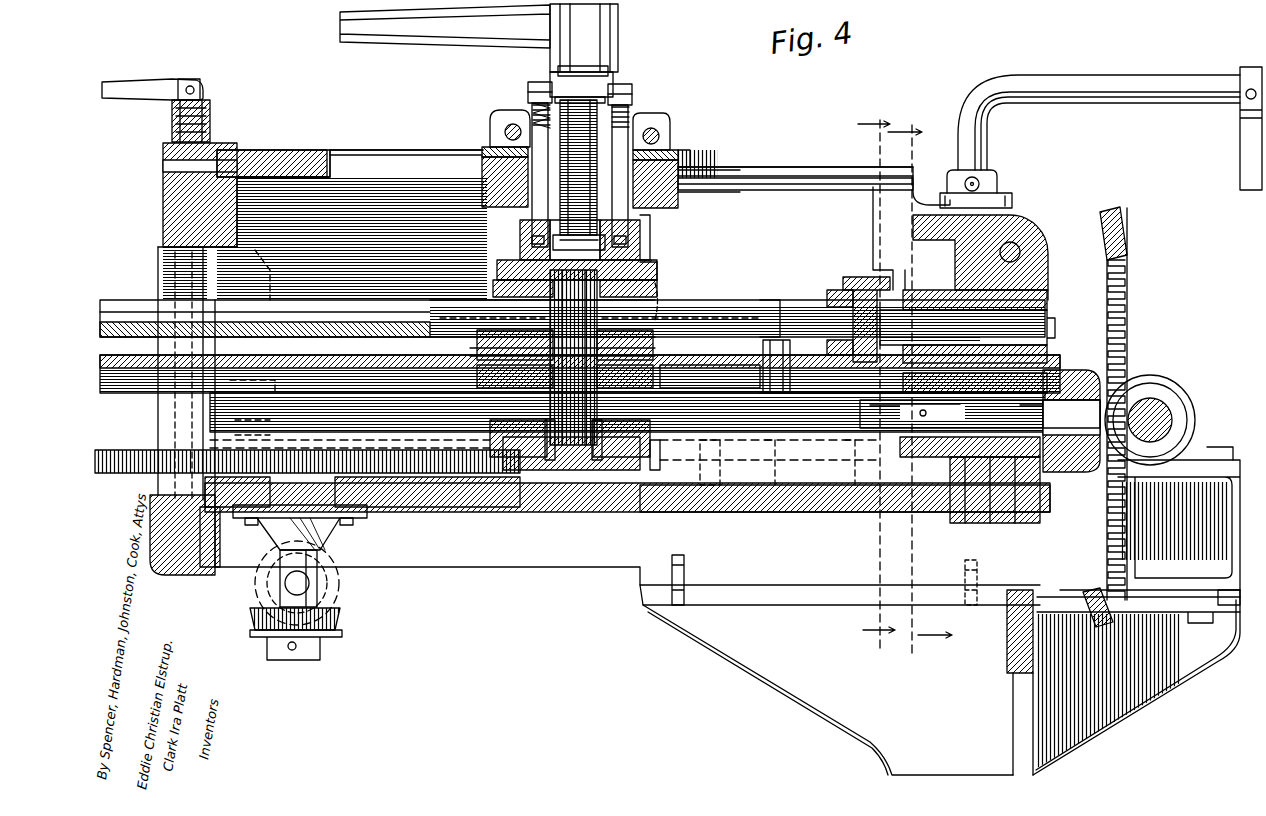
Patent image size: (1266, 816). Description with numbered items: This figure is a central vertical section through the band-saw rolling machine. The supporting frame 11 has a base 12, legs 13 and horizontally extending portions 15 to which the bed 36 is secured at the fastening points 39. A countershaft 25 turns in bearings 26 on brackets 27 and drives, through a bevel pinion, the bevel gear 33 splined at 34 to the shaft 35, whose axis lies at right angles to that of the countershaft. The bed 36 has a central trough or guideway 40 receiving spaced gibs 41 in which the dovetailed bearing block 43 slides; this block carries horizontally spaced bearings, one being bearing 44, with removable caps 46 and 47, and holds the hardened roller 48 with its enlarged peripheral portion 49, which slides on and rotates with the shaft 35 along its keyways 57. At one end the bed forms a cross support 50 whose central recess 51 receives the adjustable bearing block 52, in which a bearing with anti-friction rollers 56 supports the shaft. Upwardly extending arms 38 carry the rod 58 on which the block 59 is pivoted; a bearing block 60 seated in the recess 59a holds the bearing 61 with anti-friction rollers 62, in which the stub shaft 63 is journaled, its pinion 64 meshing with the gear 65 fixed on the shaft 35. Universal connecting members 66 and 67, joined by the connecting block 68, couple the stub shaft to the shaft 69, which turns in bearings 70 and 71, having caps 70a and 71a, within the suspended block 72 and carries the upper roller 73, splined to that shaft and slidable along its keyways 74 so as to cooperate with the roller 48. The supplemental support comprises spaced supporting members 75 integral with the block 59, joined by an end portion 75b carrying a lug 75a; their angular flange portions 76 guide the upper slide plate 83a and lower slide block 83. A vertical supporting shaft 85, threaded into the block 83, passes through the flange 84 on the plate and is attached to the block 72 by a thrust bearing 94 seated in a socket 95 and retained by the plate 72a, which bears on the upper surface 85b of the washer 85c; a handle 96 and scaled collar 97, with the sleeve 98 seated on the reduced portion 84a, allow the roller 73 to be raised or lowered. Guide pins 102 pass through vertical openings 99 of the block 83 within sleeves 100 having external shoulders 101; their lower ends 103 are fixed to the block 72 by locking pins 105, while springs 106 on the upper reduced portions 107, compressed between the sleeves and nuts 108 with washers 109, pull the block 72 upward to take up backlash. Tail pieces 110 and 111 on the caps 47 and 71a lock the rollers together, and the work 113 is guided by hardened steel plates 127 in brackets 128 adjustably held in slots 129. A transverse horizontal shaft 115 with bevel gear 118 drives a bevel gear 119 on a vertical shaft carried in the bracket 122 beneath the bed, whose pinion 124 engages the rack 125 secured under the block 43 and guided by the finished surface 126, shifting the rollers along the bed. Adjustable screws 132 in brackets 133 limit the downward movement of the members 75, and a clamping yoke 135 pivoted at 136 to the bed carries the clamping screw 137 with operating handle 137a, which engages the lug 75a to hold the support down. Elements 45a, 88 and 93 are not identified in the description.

The supporting frame 11 is at (920, 382).
The base 12 is at (881, 376).
The legs 13 is at (972, 690).
The horizontally extending portions 15 is at (712, 605).
The countershaft 25 is at (1163, 410).
The bearings 26 is at (1196, 428).
The brackets 27 is at (1150, 526).
The bevel gear 33 is at (1122, 240).
The spline 34 is at (1090, 405).
The shaft 35 is at (405, 393).
The bed 36 is at (624, 520).
The upwardly extending integral arms 38 is at (1035, 225).
The securing points 39 is at (660, 605).
The trough or guideway 40 is at (740, 470).
The gibs 41 is at (790, 455).
The bearing block 43 is at (779, 521).
The bearing 44 is at (605, 455).
The bearing block 45a is at (470, 480).
The removable cap 46 is at (655, 378).
The removable cap 47 is at (470, 428).
The roller 48 is at (555, 455).
The enlarged peripheral portion 49 is at (572, 460).
The cross support 50 is at (960, 470).
The central recess 51 is at (995, 470).
The bearing block 52 is at (1015, 470).
The anti-friction rollers 56 is at (980, 470).
The keyways 57 is at (360, 392).
The rod 58 is at (1010, 240).
The block 59 is at (1022, 250).
The recess 59a is at (955, 265).
The bearing block 60 is at (1048, 265).
The bearing 61 is at (1040, 378).
The anti-friction rollers 62 is at (1046, 305).
The stub shaft 63 is at (967, 327).
The pinion 64 is at (893, 285).
The gear 65 is at (916, 455).
The universal connecting member 66 is at (862, 280).
The universal connecting member 67 is at (835, 292).
The connecting block 68 is at (855, 363).
The shaft 69 is at (348, 300).
The bearing 70 is at (660, 290).
The removable cap 70a is at (650, 347).
The bearing 71 is at (495, 275).
The removable cap 71a is at (495, 330).
The block 72 is at (660, 272).
The plate 72a is at (532, 222).
The roller 73 is at (630, 272).
The keyways 74 is at (422, 305).
The supporting members 75 is at (420, 152).
The lug 75a is at (165, 182).
The end portion 75b is at (248, 150).
The angular flange portions 76 is at (370, 150).
The lower slide block 83 is at (672, 150).
The upper slide plate 83a is at (482, 160).
The upwardly extending flange 84 is at (640, 90).
The reduced portion 84a is at (606, 40).
The vertical supporting shaft 85 is at (578, 167).
The upper surface 85b is at (705, 190).
The washer 85c is at (690, 150).
The eye 88 is at (496, 130).
The pin 93 is at (494, 138).
The thrust bearing 94 is at (640, 225).
The socket 95 is at (515, 262).
The handle 96 is at (382, 30).
The collar 97 is at (610, 60).
The sleeve 98 is at (615, 74).
The vertical openings 99 is at (484, 200).
The sleeves 100 is at (680, 165).
The external shoulders 101 is at (483, 190).
The guide pins 102 is at (482, 205).
The lower ends 103 is at (520, 232).
The locking pins 105 is at (536, 240).
The springs 106 is at (530, 104).
The upper reduced portions 107 is at (533, 116).
The nuts 108 is at (540, 84).
The washers 109 is at (530, 122).
The tail piece 110 is at (138, 376).
The tail piece 111 is at (132, 300).
The work 113 is at (716, 362).
The transverse horizontal shaft 115 is at (340, 589).
The bevel gear 118 is at (260, 600).
The bevel gear 119 is at (340, 630).
The bracket 122 is at (325, 545).
The pinion 124 is at (295, 455).
The rack 125 is at (430, 505).
The finished surface 126 is at (495, 480).
The hardened steel plates 127 is at (770, 330).
The brackets 128 is at (790, 362).
The slots 129 is at (740, 480).
The adjustable screws 132 is at (300, 268).
The brackets 133 is at (290, 152).
The clamping yoke 135 is at (175, 268).
The pivot 136 is at (222, 560).
The clamping screw 137 is at (210, 112).
The operating handle 137a is at (172, 80).